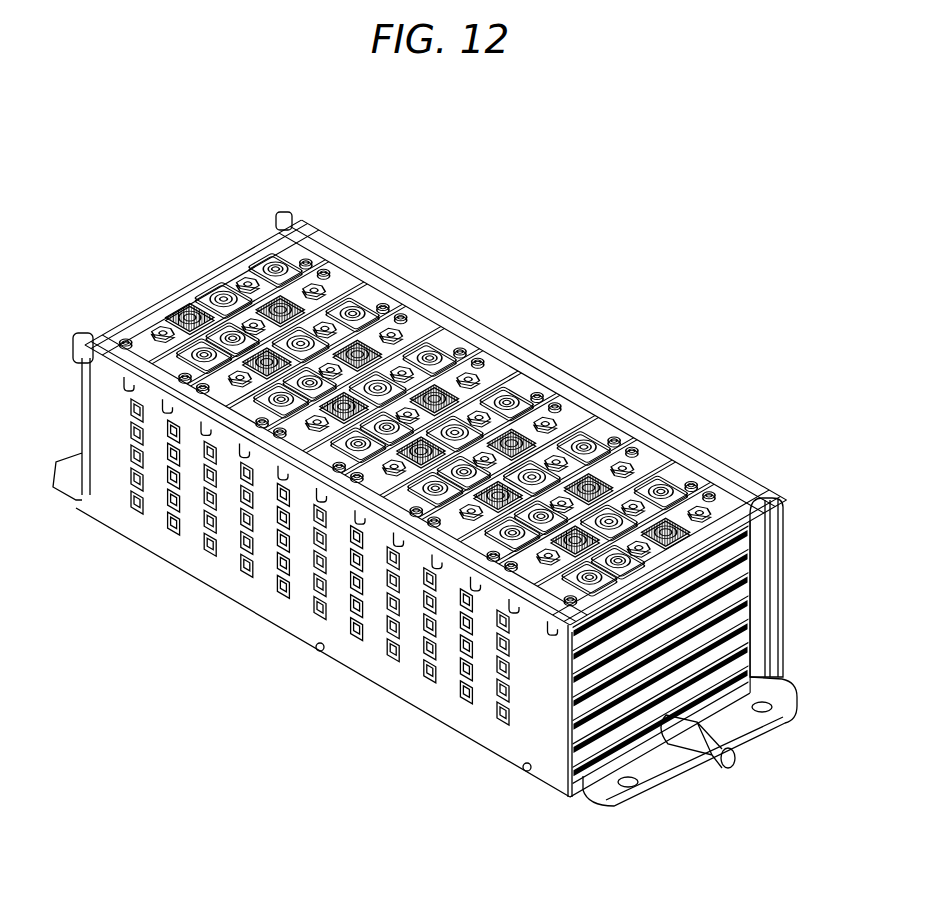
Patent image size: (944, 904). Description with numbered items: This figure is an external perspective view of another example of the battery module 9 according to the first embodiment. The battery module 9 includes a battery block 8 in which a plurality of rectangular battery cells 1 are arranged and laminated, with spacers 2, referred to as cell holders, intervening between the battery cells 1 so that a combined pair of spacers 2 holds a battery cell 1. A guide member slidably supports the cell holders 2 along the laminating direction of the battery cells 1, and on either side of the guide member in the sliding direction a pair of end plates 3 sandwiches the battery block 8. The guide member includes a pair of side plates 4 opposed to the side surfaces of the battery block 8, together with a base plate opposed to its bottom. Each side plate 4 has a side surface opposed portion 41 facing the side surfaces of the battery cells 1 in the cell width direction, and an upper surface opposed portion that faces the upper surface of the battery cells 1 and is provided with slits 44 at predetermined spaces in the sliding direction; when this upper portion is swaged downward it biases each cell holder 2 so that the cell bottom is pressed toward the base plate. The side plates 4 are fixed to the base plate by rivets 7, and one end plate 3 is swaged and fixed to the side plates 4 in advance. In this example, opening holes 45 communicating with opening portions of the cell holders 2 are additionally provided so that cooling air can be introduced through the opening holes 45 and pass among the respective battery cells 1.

The battery cell 1 is at (760, 522).
The spacer 2 is at (757, 608).
The end plate 3 is at (203, 282).
The side plate 4 is at (284, 218).
The rivet 7 is at (318, 652).
The battery block 8 is at (453, 380).
The battery module 9 is at (435, 493).
The side surface opposed portion 41 is at (325, 598).
The slit 44 is at (603, 400).
The opening hole 45 is at (313, 597).